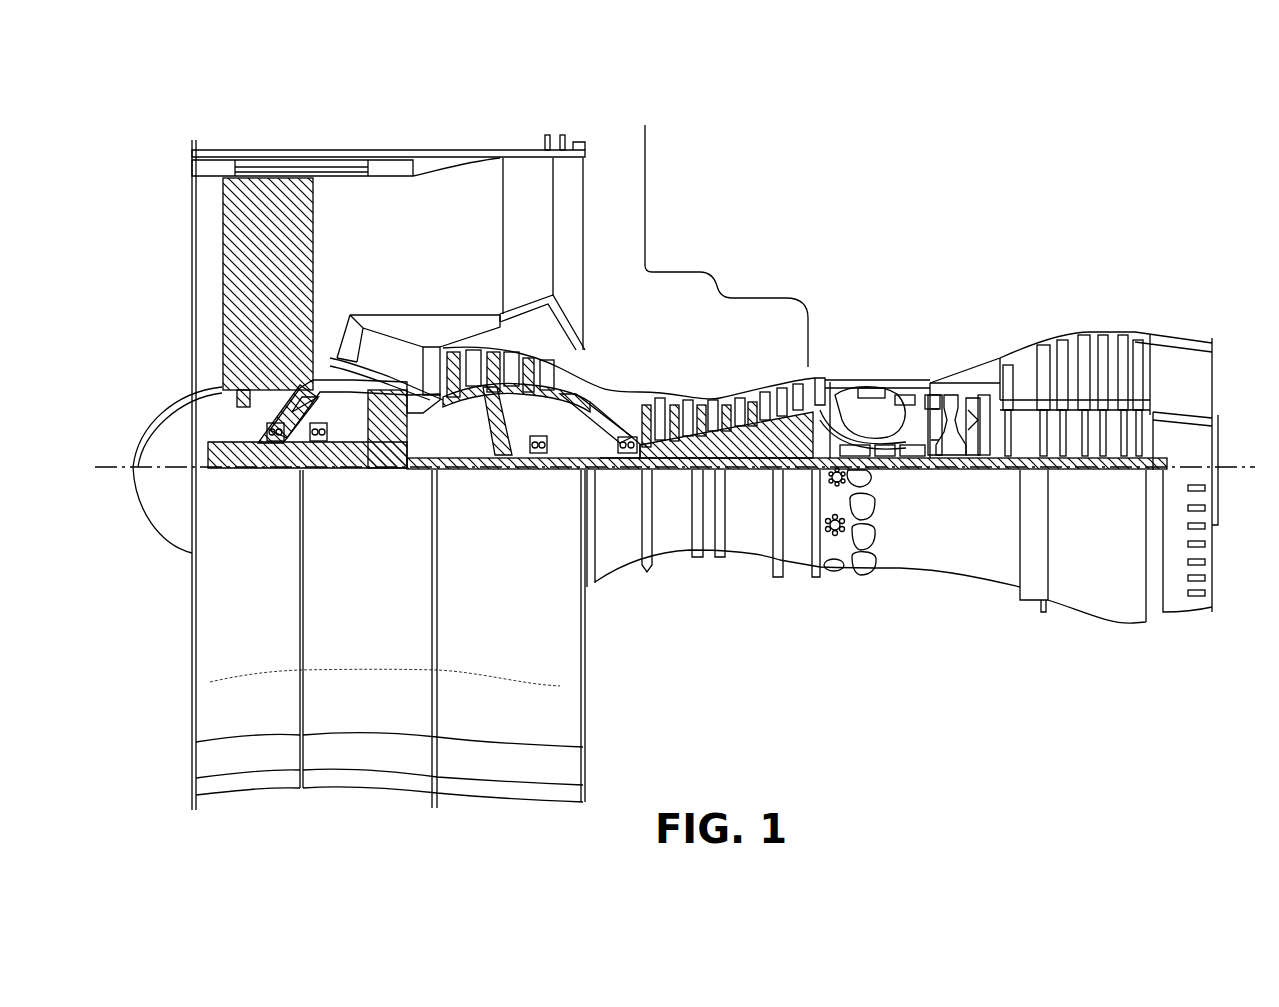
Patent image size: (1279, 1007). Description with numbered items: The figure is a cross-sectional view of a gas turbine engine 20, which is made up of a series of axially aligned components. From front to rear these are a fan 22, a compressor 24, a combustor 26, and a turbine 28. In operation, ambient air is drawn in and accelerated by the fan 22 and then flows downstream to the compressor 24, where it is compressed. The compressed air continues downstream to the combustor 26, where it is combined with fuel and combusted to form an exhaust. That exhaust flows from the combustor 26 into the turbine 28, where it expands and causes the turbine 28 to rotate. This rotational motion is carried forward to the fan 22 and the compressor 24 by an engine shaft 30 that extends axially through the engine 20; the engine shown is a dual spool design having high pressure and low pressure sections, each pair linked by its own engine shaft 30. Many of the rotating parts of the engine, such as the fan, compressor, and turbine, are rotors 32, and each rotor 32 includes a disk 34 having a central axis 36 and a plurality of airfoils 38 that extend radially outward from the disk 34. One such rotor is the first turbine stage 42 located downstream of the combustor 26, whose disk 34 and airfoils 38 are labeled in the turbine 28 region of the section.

The gas turbine engine 20 is at (774, 214).
The fan 22 is at (368, 126).
The compressor 24 is at (645, 126).
The combustor 26 is at (883, 403).
The turbine 28 is at (928, 367).
The engine shaft 30 is at (923, 471).
The rotor 32 is at (953, 432).
The first turbine stage 42 is at (1004, 525).
The disk 34 is at (940, 457).
The central axis 36 is at (1230, 470).
The airfoil 38 is at (950, 405).